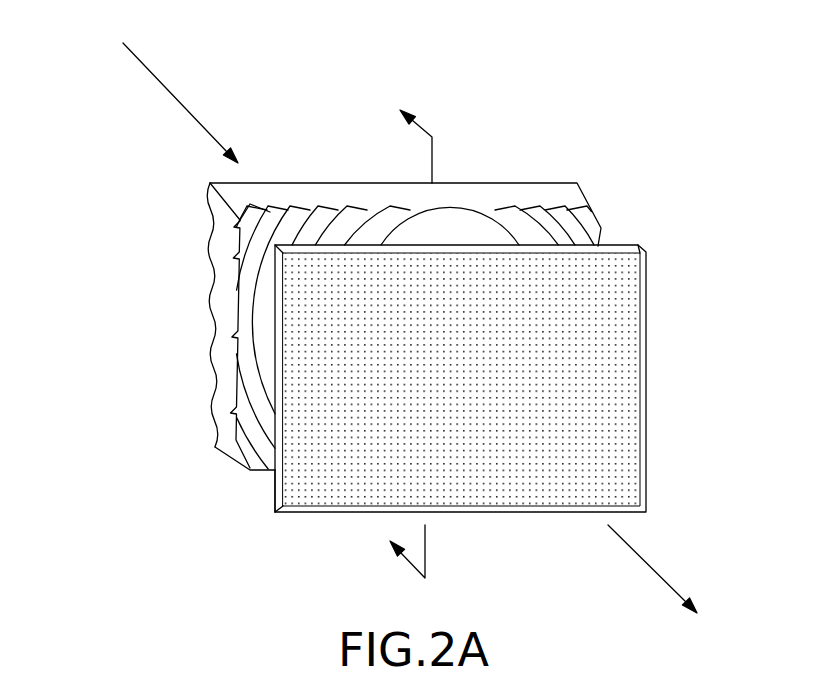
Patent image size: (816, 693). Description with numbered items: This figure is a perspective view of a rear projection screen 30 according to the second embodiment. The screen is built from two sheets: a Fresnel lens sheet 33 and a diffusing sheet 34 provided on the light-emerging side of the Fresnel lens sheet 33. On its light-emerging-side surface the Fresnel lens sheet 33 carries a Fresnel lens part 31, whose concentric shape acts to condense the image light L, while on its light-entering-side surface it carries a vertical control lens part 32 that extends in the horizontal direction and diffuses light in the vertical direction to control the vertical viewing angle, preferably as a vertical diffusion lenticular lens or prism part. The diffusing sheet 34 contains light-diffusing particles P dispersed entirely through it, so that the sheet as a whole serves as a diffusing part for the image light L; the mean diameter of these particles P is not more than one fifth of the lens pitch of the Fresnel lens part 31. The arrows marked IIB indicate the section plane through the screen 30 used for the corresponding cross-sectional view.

The rear projection screen 30 is at (601, 162).
The Fresnel lens part 31 is at (250, 338).
The vertical control lens part 32 is at (207, 300).
The Fresnel lens sheet 33 is at (115, 268).
The diffusing sheet 34 is at (264, 489).
The light-diffusing particles P is at (508, 487).
The image light L is at (156, 78).
The section line IIB is at (406, 338).